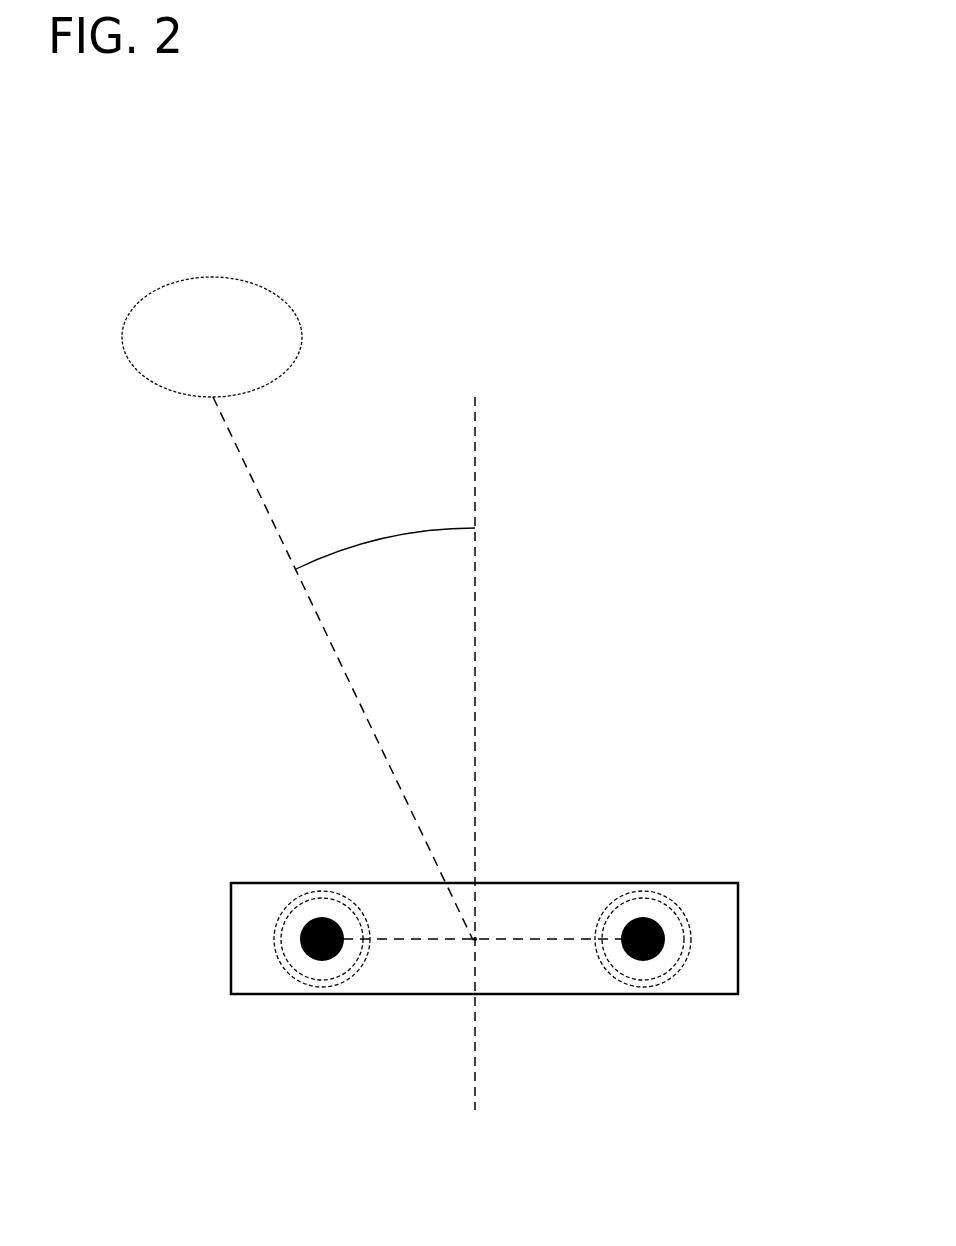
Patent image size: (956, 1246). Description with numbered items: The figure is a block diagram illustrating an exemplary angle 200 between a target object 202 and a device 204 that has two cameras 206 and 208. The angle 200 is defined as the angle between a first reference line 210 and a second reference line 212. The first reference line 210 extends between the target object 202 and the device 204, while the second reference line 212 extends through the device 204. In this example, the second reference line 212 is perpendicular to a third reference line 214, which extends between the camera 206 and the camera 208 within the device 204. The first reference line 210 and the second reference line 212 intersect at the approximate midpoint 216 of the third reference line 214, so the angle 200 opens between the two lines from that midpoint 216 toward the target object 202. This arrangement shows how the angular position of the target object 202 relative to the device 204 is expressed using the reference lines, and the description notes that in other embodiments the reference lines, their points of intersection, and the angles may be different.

The angle 200 is at (401, 460).
The target object 202 is at (187, 237).
The device 204 is at (484, 938).
The camera 206 is at (272, 942).
The camera 208 is at (688, 937).
The first reference line 210 is at (332, 700).
The second reference line 212 is at (503, 593).
The third reference line 214 is at (411, 951).
The midpoint 216 is at (482, 928).